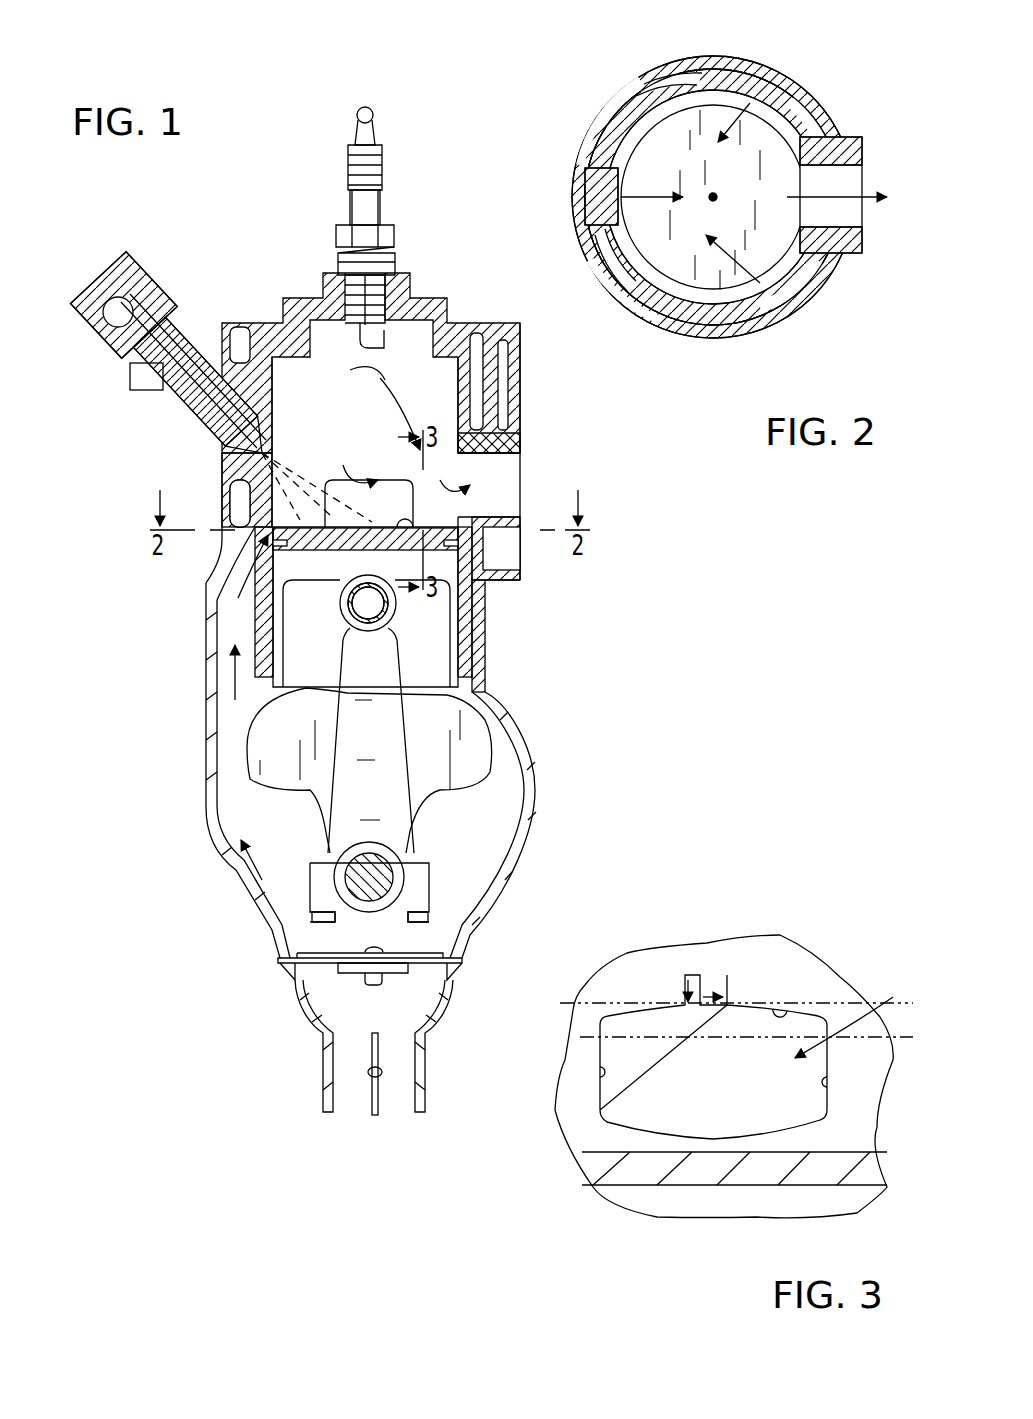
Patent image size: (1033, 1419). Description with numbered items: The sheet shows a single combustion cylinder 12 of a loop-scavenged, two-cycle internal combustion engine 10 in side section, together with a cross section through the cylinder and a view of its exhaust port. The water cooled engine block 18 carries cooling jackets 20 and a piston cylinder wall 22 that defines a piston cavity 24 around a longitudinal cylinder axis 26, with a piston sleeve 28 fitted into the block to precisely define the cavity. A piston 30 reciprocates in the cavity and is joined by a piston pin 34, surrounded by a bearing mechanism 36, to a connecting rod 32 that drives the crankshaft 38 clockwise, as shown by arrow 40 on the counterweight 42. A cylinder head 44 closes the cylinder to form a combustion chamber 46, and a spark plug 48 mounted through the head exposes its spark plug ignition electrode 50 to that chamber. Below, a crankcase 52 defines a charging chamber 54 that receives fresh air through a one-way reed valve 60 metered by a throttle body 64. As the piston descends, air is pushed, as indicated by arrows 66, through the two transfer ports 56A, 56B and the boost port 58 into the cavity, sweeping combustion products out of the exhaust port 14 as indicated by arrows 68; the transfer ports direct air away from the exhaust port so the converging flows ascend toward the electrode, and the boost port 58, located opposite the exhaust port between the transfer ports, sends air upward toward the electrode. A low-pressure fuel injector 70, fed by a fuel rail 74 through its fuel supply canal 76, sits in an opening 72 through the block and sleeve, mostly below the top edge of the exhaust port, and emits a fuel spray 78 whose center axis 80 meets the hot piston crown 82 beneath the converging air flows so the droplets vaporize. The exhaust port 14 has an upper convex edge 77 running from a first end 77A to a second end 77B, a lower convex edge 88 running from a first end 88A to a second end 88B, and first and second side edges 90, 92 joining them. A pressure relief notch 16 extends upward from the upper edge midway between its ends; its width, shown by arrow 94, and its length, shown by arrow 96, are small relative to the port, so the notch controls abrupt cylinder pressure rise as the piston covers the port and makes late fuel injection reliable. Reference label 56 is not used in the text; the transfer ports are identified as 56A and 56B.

In FIG. 1, the internal combustion engine 10 is at (200, 195).
In FIG. 1, the combustion cylinder 12 is at (460, 323).
In FIG. 3, the combustion cylinder 12 is at (660, 955).
In FIG. 1, the exhaust port 14 is at (522, 446).
In FIG. 2, the exhaust port 14 is at (858, 150).
In FIG. 3, the exhaust port 14 is at (758, 1057).
In FIG. 1, the pressure relief notch 16 is at (505, 440).
In FIG. 3, the pressure relief notch 16 is at (714, 975).
In FIG. 1, the engine block 18 is at (505, 325).
In FIG. 1, the cooling jackets 20 is at (240, 327).
In FIG. 2, the cooling jackets 20 is at (640, 80).
In FIG. 1, the piston cylinder wall 22 is at (222, 350).
In FIG. 2, the piston cylinder wall 22 is at (660, 95).
In FIG. 1, the piston cavity 24 is at (400, 318).
In FIG. 2, the piston cavity 24 is at (655, 132).
In FIG. 2, the longitudinal cylinder axis 26 is at (718, 195).
In FIG. 1, the piston sleeve 28 is at (275, 410).
In FIG. 2, the piston sleeve 28 is at (640, 250).
In FIG. 3, the piston sleeve 28 is at (612, 978).
In FIG. 1, the piston 30 is at (305, 560).
In FIG. 3, the piston 30 is at (873, 1170).
In FIG. 1, the connecting rod 32 is at (385, 730).
In FIG. 1, the piston pin 34 is at (380, 615).
In FIG. 1, the bearing mechanism 36 is at (345, 615).
In FIG. 1, the crankshaft 38 is at (395, 880).
In FIG. 1, the arrow 40 is at (282, 730).
In FIG. 1, the counterweight 42 is at (458, 788).
In FIG. 1, the cylinder head 44 is at (286, 300).
In FIG. 1, the combustion chamber 46 is at (395, 290).
In FIG. 1, the spark plug 48 is at (380, 175).
In FIG. 1, the spark plug ignition electrode 50 is at (358, 344).
In FIG. 1, the crankcase 52 is at (510, 862).
In FIG. 1, the charging chamber 54 is at (480, 885).
In FIG. 1, the piston crown recess 56 is at (376, 500).
In FIG. 2, the transfer port 56A is at (775, 85).
In FIG. 2, the transfer port 56B is at (768, 325).
In FIG. 1, the boost port 58 is at (235, 535).
In FIG. 2, the boost port 58 is at (585, 186).
In FIG. 1, the one-way reed valve 60 is at (355, 958).
In FIG. 1, the throttle body 64 is at (370, 1070).
In FIG. 1, the arrows 66 is at (230, 560).
In FIG. 2, the arrows 66 is at (640, 205).
In FIG. 1, the arrows 68 is at (352, 372).
In FIG. 2, the arrows 68 is at (840, 195).
In FIG. 1, the fuel injector 70 is at (132, 385).
In FIG. 1, the opening 72 is at (218, 452).
In FIG. 1, the fuel rail 74 is at (120, 278).
In FIG. 1, the fuel supply canal 76 is at (103, 300).
In FIG. 1, the upper convex edge 77 is at (485, 480).
In FIG. 3, the upper convex edge 77 is at (788, 1016).
In FIG. 3, the first end of upper convex edge 77A is at (577, 1013).
In FIG. 3, the second end of upper convex edge 77B is at (850, 997).
In FIG. 1, the fuel spray 78 is at (300, 470).
In FIG. 1, the center axis of fuel spray 80 is at (318, 480).
In FIG. 1, the piston crown 82 is at (400, 528).
In FIG. 3, the lower convex edge 88 is at (720, 1142).
In FIG. 3, the first end of lower convex edge 88A is at (580, 1132).
In FIG. 3, the second end of lower convex edge 88B is at (867, 1137).
In FIG. 3, the first side edge 90 is at (597, 1071).
In FIG. 3, the second side edge 92 is at (822, 1083).
In FIG. 3, the arrow 94 is at (717, 997).
In FIG. 3, the arrow 96 is at (683, 990).